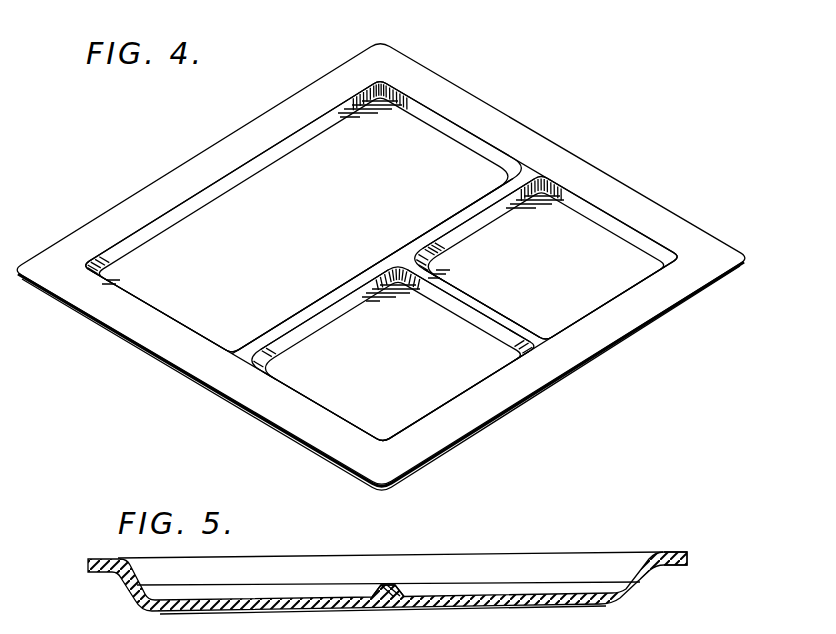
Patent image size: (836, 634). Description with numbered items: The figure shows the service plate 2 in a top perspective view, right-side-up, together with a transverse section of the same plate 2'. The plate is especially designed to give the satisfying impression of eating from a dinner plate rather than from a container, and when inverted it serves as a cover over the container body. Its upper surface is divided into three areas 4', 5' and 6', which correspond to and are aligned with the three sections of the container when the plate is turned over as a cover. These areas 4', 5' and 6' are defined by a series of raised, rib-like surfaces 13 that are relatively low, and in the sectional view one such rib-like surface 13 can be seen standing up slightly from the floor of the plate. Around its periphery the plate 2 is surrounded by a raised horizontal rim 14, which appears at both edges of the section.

In FIG. 4, the service plate 2 is at (381, 267).
In FIG. 5, the service plate 2' is at (387, 559).
In FIG. 4, the area 4' is at (304, 217).
In FIG. 4, the area 5' is at (393, 354).
In FIG. 4, the area 6' is at (546, 257).
In FIG. 4, the raised rib-like surfaces 13 is at (438, 237).
In FIG. 5, the raised rib-like surfaces 13 is at (388, 585).
In FIG. 5, the raised horizontal rim 14 is at (672, 553).